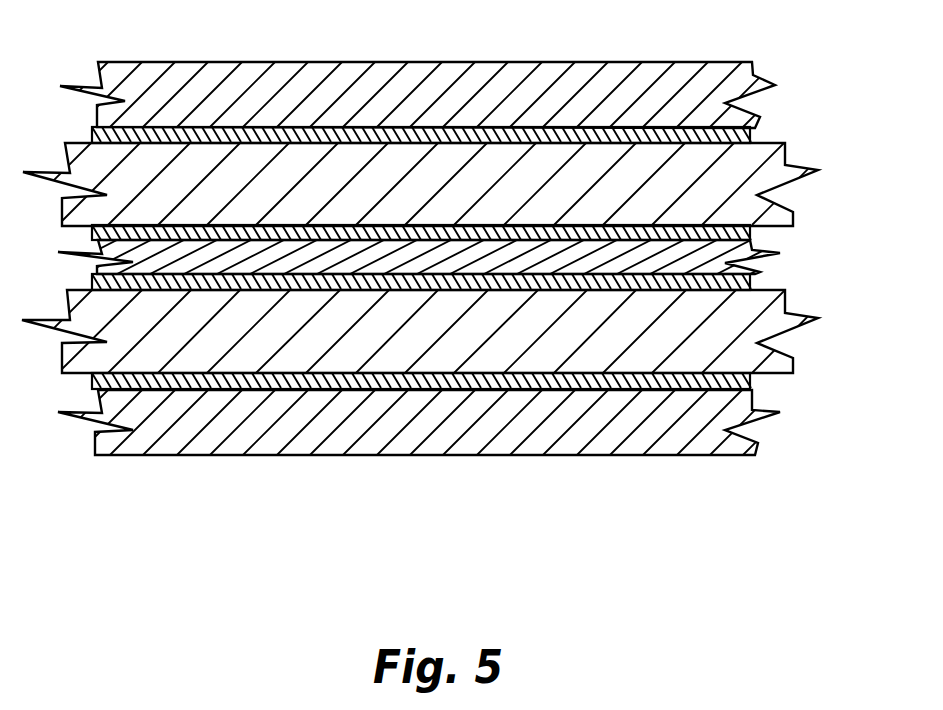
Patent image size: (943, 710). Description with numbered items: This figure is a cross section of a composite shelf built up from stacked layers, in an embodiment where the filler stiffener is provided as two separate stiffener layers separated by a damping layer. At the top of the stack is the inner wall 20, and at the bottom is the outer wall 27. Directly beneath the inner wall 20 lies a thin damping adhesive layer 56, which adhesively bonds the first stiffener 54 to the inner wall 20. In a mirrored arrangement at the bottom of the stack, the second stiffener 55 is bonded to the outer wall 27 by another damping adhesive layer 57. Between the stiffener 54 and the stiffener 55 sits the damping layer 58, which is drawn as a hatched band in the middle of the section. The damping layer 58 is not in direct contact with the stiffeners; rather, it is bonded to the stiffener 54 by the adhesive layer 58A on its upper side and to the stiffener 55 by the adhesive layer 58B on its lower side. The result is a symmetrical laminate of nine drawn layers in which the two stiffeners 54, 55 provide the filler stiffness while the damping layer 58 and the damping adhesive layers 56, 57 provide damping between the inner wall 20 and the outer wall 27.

The inner wall 20 is at (755, 76).
The damping adhesive layer 56 is at (752, 135).
The stiffener 54 is at (763, 183).
The adhesive layer 58A is at (787, 235).
The damping layer 58 is at (760, 263).
The adhesive layer 58B is at (750, 283).
The stiffener 55 is at (763, 327).
The damping adhesive layer 57 is at (750, 382).
The outer wall 27 is at (757, 452).